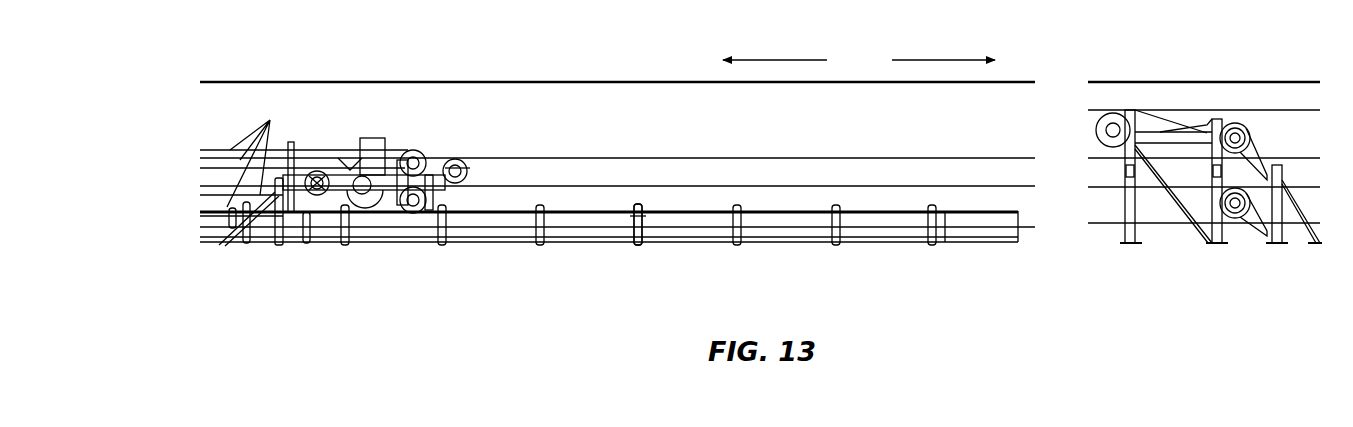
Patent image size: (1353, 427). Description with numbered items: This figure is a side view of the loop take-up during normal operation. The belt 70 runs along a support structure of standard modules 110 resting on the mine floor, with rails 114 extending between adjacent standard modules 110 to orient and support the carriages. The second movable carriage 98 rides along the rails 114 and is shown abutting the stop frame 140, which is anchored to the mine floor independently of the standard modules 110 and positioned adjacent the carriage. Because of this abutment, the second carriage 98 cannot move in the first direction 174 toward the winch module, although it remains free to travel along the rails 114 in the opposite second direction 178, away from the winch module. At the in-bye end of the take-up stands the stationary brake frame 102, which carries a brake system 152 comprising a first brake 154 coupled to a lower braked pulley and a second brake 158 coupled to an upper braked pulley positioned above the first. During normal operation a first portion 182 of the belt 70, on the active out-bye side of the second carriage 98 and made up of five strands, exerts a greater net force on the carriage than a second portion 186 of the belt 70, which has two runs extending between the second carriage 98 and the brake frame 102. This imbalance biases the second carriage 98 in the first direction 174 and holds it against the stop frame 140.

The belt 70 is at (726, 147).
The second movable carriage 98 is at (409, 119).
The brake frame 102 is at (1168, 255).
The standard modules 110 is at (853, 250).
The rails 114 is at (641, 220).
The stop frame 140 is at (283, 247).
The brake system 152 is at (1264, 117).
The first brake 154 is at (1243, 220).
The second brake 158 is at (1242, 138).
The first direction 174 is at (778, 60).
The second direction 178 is at (918, 60).
The first portion of the belt 182 is at (261, 150).
The second portion of the belt 186 is at (880, 187).